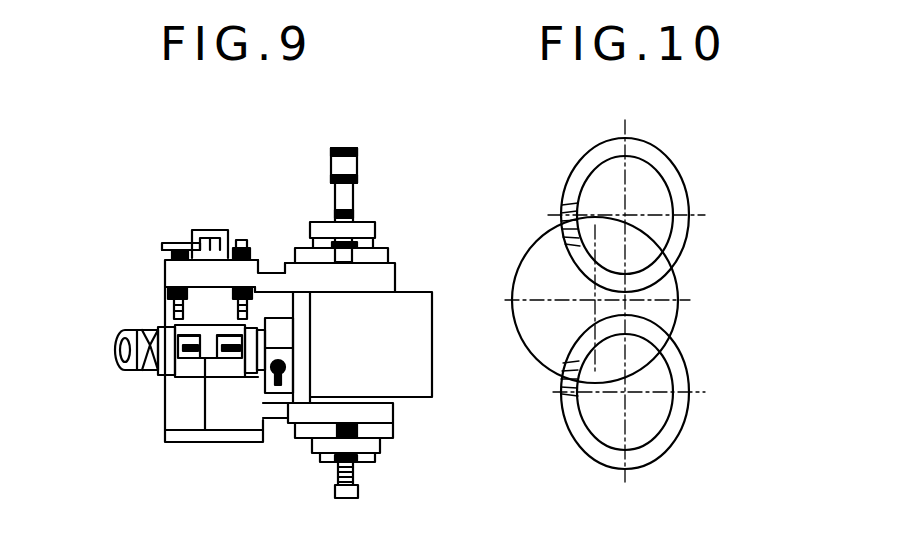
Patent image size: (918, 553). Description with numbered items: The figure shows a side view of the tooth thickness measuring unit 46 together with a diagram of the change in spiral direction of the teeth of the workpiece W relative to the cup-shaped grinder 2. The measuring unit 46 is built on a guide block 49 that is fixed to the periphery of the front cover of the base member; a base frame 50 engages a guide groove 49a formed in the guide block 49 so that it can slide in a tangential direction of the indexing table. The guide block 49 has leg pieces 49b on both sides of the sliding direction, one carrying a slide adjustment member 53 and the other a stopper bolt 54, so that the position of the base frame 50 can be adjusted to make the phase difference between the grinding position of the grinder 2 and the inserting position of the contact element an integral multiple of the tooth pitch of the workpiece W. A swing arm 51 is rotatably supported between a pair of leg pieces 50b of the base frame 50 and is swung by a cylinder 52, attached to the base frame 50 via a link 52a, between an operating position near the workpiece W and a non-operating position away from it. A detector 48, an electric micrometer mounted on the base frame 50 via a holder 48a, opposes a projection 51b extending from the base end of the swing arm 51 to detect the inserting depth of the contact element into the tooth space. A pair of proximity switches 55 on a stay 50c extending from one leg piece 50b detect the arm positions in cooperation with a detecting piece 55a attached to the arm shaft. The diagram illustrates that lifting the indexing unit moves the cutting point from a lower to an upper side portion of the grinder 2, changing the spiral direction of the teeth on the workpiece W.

In FIG. 10, the cup-shaped grinder 2 is at (535, 250).
In FIG. 10, the workpiece W is at (640, 150).
In FIG. 9, the tooth thickness measuring unit 46 is at (117, 332).
In FIG. 9, the detector 48 is at (285, 365).
In FIG. 9, the holder 48a is at (283, 337).
In FIG. 9, the guide block 49 is at (383, 257).
In FIG. 9, the guide groove 49a is at (332, 223).
In FIG. 9, the leg pieces 49b is at (365, 230).
In FIG. 9, the base frame 50 is at (385, 413).
In FIG. 9, the leg pieces 50b is at (163, 293).
In FIG. 9, the stay 50c is at (213, 285).
In FIG. 9, the swing arm 51 is at (150, 378).
In FIG. 9, the projection 51b is at (243, 387).
In FIG. 9, the cylinder 52 is at (422, 307).
In FIG. 9, the link 52a is at (205, 430).
In FIG. 9, the slide adjustment member 53 is at (350, 168).
In FIG. 9, the stopper bolt 54 is at (342, 500).
In FIG. 9, the proximity switches 55 is at (172, 256).
In FIG. 9, the detecting piece 55a is at (172, 242).